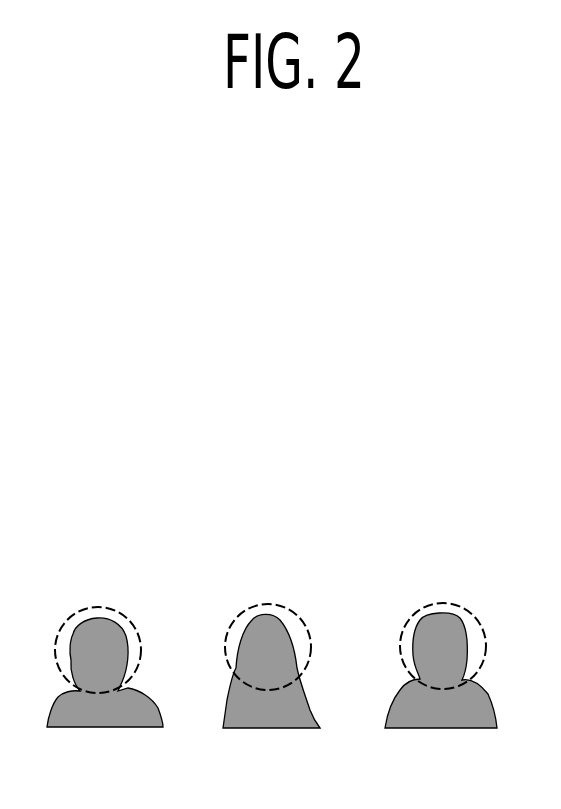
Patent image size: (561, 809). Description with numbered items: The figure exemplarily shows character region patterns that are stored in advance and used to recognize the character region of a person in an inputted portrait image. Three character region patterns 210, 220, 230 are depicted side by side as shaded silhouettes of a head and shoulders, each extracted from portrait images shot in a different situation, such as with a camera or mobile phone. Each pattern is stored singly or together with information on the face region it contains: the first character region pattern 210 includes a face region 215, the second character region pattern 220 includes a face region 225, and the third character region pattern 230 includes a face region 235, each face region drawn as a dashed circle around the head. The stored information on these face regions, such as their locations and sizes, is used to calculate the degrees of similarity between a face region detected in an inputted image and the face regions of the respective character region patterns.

The character region pattern 210 is at (102, 727).
The face region 215 is at (115, 612).
The character region pattern 220 is at (268, 728).
The face region 225 is at (285, 610).
The character region pattern 230 is at (440, 730).
The face region 235 is at (466, 607).